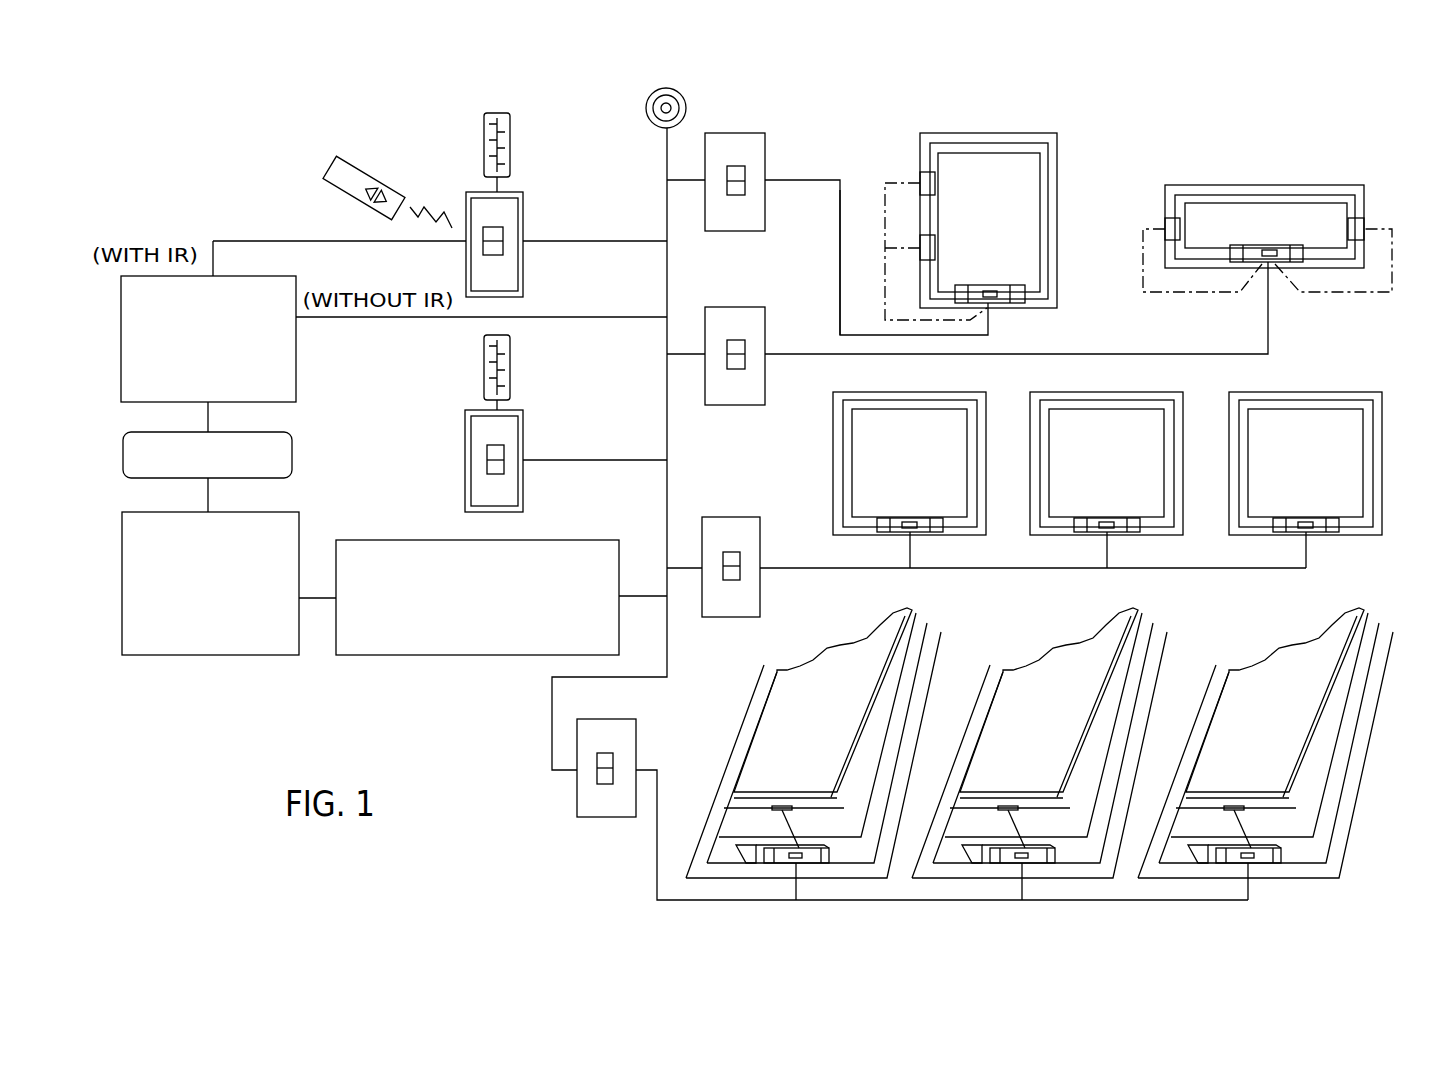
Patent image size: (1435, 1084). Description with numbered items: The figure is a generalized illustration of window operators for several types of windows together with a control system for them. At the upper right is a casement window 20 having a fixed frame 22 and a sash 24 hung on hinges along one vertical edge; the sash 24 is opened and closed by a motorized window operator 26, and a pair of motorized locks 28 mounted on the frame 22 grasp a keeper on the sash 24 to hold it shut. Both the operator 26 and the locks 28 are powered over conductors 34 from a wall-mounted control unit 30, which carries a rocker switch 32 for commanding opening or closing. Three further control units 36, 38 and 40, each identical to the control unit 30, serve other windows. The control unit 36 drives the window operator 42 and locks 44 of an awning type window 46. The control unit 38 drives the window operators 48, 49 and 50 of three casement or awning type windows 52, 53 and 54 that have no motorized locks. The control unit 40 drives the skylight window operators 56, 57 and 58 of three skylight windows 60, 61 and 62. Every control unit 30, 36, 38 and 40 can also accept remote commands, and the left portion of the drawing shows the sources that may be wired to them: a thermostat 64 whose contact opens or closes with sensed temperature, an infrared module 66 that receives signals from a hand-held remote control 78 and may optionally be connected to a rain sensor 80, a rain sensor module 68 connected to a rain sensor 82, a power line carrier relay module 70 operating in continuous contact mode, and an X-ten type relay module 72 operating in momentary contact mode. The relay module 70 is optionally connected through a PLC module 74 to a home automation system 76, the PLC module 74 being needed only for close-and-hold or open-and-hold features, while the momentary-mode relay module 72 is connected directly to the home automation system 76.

The casement window 20 is at (1062, 162).
The fixed frame 22 is at (1057, 216).
The sash 24 is at (1025, 290).
The motorized window operator 26 is at (1007, 296).
The motorized locks 28 is at (936, 190).
The wall-mounted control unit 30 is at (767, 138).
The rocker switch 32 is at (745, 172).
The conductors 34 is at (840, 232).
The control unit 36 is at (748, 330).
The control unit 38 is at (745, 535).
The control unit 40 is at (625, 740).
The window operator 42 is at (1292, 254).
The locks 44 is at (1167, 222).
The awning type window 46 is at (1276, 182).
The window operator 48 is at (940, 528).
The window operator 49 is at (1135, 543).
The window operator 50 is at (1333, 544).
The casement or awning type window 52 is at (910, 392).
The casement or awning type window 53 is at (1106, 449).
The casement or awning type window 54 is at (1305, 449).
The skylight window operator 56 is at (810, 856).
The skylight window operator 57 is at (1033, 857).
The skylight window operator 58 is at (1260, 857).
The skylight window 60 is at (745, 702).
The skylight window 61 is at (988, 678).
The skylight window 62 is at (1368, 775).
The thermostat 64 is at (646, 108).
The infrared module 66 is at (523, 215).
The rain sensor module 68 is at (523, 428).
The PLC relay module 70 is at (296, 360).
The X-10 type relay module 72 is at (570, 543).
The PLC module 74 is at (292, 438).
The home automation system 76 is at (210, 628).
The hand-held remote control 78 is at (348, 170).
The rain sensor 80 is at (484, 130).
The rain sensor 82 is at (512, 350).